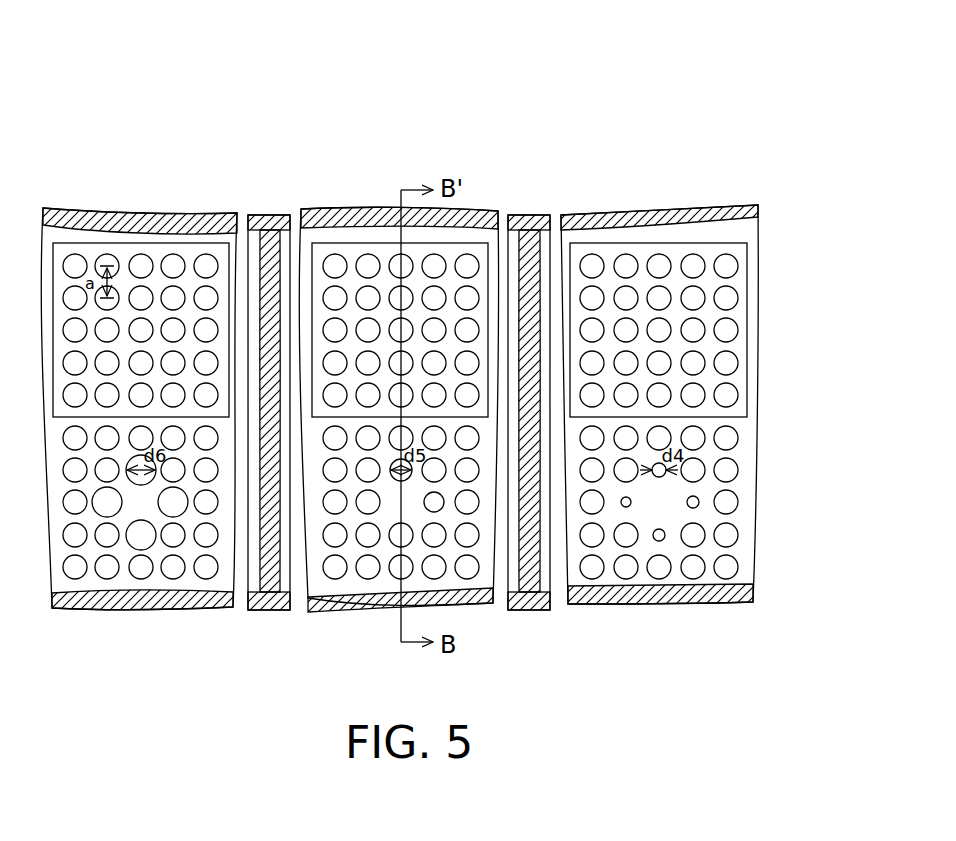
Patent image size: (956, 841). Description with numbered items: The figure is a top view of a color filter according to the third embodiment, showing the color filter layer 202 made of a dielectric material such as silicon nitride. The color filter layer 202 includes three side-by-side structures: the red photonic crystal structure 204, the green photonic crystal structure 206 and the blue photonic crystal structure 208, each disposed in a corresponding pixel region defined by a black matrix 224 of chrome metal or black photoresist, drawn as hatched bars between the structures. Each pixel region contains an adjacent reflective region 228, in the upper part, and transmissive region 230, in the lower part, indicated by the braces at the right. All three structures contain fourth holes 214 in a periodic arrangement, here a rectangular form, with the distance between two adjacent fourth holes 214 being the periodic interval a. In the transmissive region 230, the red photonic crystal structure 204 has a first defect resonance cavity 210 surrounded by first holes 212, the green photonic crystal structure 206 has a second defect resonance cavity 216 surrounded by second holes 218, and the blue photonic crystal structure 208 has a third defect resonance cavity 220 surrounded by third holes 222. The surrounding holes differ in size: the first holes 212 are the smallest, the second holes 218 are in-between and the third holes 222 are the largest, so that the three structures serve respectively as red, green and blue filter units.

The color filter layer 202 is at (683, 47).
The red photonic crystal structure 204 is at (660, 168).
The green photonic crystal structure 206 is at (403, 170).
The blue photonic crystal structure 208 is at (141, 170).
The first defect resonance cavity 210 is at (660, 490).
The first holes 212 is at (694, 504).
The fourth holes 214 is at (206, 296).
The second defect resonance cavity 216 is at (393, 506).
The second holes 218 is at (436, 504).
The third defect resonance cavity 220 is at (140, 507).
The third holes 222 is at (176, 505).
The black matrix 224 is at (272, 578).
The reflective region 228 is at (783, 252).
The transmissive region 230 is at (783, 425).